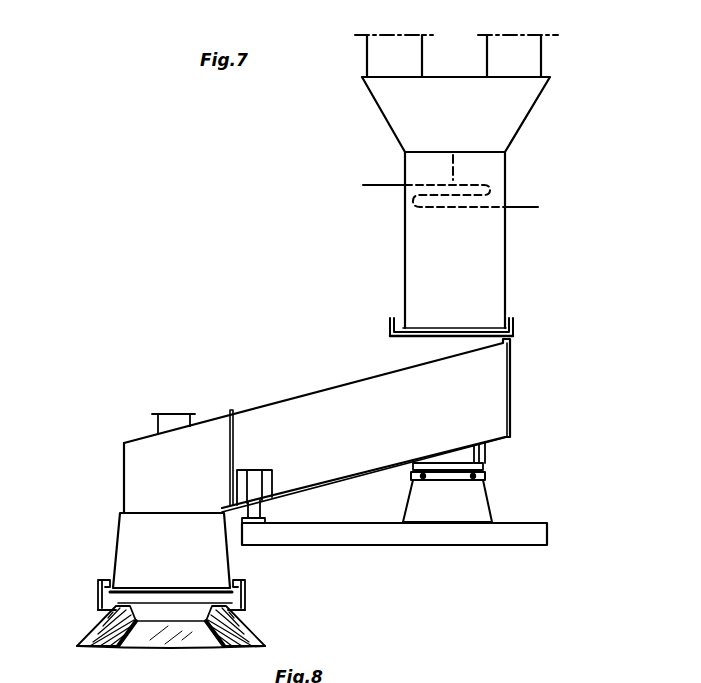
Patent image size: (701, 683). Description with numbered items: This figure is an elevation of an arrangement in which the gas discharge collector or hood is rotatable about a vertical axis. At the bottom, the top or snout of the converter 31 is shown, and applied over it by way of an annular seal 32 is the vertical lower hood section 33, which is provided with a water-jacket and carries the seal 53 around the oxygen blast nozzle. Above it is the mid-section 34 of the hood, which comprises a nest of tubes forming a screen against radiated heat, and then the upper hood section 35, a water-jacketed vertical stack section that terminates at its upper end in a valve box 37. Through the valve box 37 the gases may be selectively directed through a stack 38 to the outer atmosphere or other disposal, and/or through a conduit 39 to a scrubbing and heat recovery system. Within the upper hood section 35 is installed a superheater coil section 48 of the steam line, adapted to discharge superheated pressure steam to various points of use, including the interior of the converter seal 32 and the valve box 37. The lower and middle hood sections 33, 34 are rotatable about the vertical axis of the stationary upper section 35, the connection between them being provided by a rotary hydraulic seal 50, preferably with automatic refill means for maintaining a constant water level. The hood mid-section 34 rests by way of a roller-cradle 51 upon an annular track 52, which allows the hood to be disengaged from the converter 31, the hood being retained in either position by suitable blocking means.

The converter snout 31 is at (105, 640).
The annular seal 32 is at (245, 600).
The lower hood section 33 is at (123, 535).
The mid-section of hood 34 is at (315, 407).
The upper hood section 35 is at (497, 276).
The valve box 37 is at (512, 117).
The stack 38 is at (375, 50).
The conduit 39 is at (530, 50).
The superheater coil section 48 is at (433, 208).
The rotary hydraulic seal 50 is at (515, 332).
The roller-cradle 51 is at (260, 508).
The annular track 52 is at (257, 518).
The seal around oxygen blast nozzle 53 is at (172, 418).